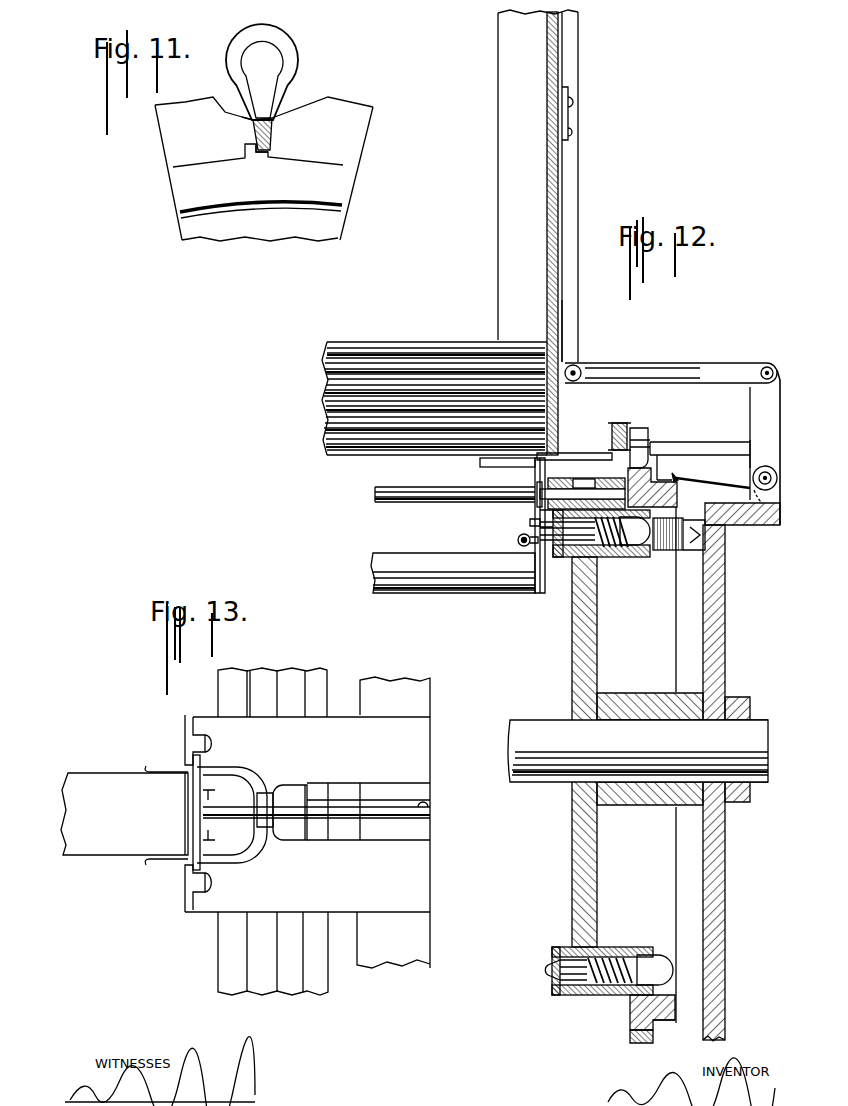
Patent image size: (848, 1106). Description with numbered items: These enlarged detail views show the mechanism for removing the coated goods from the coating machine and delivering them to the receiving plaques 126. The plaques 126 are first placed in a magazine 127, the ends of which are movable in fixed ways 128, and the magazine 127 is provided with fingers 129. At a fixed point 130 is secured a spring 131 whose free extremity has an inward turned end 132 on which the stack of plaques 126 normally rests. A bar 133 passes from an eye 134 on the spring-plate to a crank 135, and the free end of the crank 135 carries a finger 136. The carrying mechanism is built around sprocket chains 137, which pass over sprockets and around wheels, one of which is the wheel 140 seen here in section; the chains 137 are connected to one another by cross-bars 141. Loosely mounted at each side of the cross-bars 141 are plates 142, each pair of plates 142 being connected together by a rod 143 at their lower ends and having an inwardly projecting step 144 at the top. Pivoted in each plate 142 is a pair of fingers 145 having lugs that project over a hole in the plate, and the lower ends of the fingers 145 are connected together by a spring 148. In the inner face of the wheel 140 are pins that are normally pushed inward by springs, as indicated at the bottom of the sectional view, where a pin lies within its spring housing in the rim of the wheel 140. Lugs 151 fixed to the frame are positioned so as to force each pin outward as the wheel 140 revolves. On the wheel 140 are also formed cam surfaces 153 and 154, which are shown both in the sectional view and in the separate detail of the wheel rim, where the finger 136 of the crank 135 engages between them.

In FIG. 12, the receiving plaques 126 is at (434, 388).
In FIG. 13, the receiving plaques 126 is at (124, 815).
In FIG. 12, the magazine 127 is at (577, 193).
In FIG. 13, the magazine 127 is at (307, 831).
In FIG. 13, the fixed ways 128 is at (192, 745).
In FIG. 11, the fingers 129 is at (262, 72).
In FIG. 12, the fingers 129 is at (643, 444).
In FIG. 12, the spring fixing point 130 is at (567, 133).
In FIG. 12, the spring 131 is at (563, 313).
In FIG. 13, the spring 131 is at (210, 822).
In FIG. 12, the inward turned end 132 is at (560, 457).
In FIG. 12, the bar 133 is at (671, 362).
In FIG. 13, the bar 133 is at (297, 828).
In FIG. 12, the eye 134 is at (580, 370).
In FIG. 13, the eye 134 is at (230, 804).
In FIG. 12, the crank 135 is at (759, 447).
In FIG. 13, the crank 135 is at (429, 813).
In FIG. 11, the finger 136 is at (270, 132).
In FIG. 12, the finger 136 is at (669, 489).
In FIG. 12, the sprocket chains 137 is at (590, 479).
In FIG. 11, the wheel 140 is at (322, 220).
In FIG. 12, the wheel 140 is at (638, 774).
In FIG. 12, the cross-bars 141 is at (437, 496).
In FIG. 12, the plates 142 is at (537, 510).
In FIG. 12, the rod 143 is at (458, 585).
In FIG. 12, the inwardly projecting step 144 is at (507, 473).
In FIG. 12, the fingers 145 is at (533, 522).
In FIG. 12, the spring 148 is at (523, 547).
In FIG. 12, the lugs 151 is at (664, 553).
In FIG. 11, the cam surface 153 is at (252, 119).
In FIG. 11, the cam surface 154 is at (267, 154).